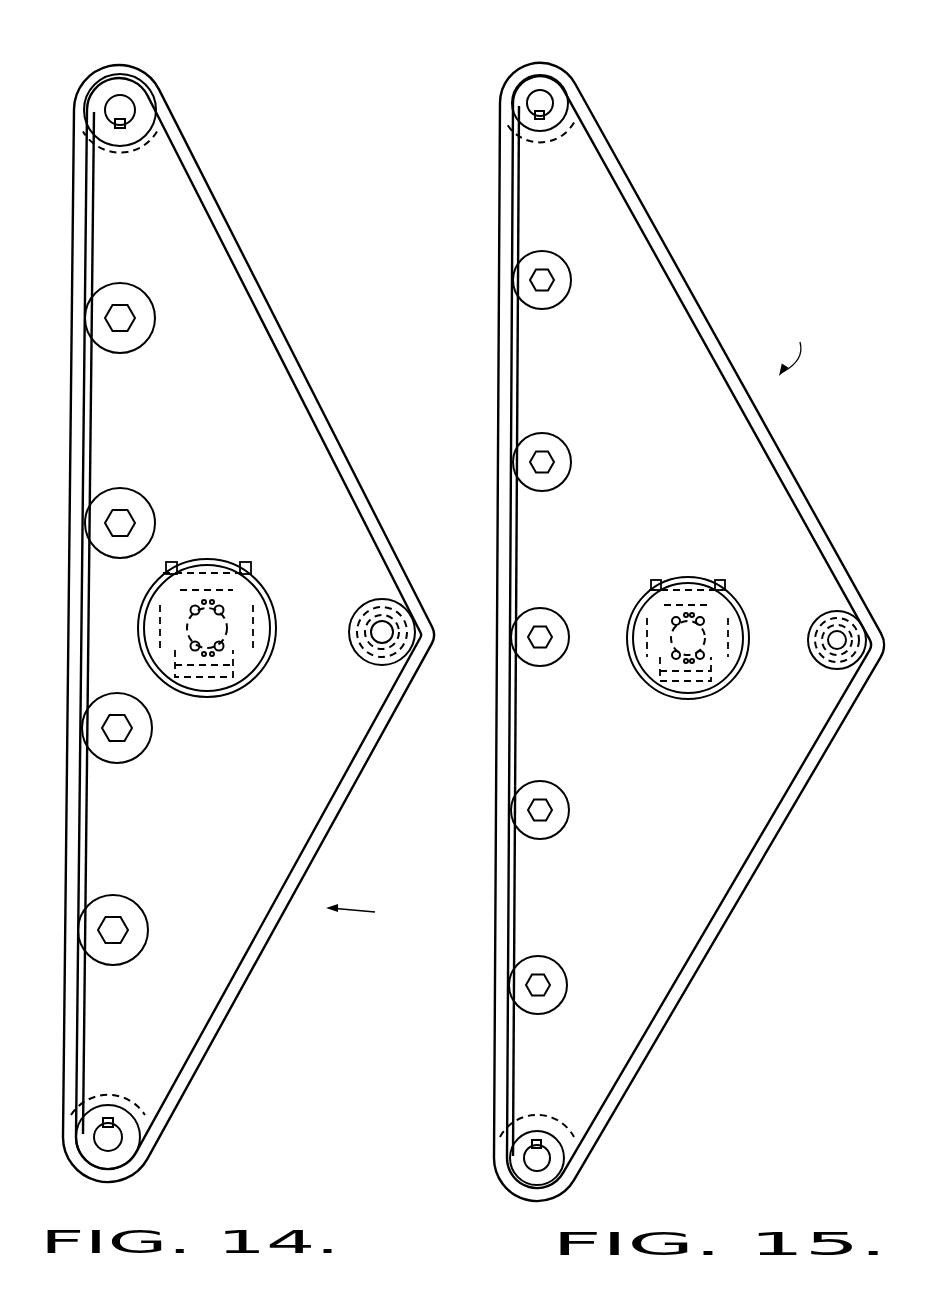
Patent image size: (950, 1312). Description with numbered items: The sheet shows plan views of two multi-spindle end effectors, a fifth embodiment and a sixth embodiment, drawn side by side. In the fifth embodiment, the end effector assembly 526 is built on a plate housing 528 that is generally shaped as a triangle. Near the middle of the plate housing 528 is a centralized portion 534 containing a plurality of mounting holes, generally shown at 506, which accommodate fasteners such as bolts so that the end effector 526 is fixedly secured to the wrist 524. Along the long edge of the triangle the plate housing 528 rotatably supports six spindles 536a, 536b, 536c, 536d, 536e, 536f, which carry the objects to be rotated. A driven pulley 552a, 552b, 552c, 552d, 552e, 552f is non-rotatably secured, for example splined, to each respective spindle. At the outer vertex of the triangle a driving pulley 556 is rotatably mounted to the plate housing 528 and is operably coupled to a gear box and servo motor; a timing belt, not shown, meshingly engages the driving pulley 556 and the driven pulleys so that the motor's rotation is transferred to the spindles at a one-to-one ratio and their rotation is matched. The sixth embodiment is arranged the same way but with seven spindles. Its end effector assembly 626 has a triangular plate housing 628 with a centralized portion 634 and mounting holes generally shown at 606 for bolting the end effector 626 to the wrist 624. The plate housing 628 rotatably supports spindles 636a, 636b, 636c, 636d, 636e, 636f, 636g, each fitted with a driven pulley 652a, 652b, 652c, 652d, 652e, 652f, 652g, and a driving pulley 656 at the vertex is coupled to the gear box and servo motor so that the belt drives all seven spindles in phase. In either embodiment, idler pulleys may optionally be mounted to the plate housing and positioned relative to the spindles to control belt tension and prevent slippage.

In FIG. 14, the mounting holes 506 is at (233, 635).
In FIG. 14, the wrist 524 is at (227, 668).
In FIG. 14, the end effector assembly 526 is at (375, 922).
In FIG. 14, the plate housing 528 is at (303, 372).
In FIG. 14, the centralized portion 534 is at (262, 616).
In FIG. 14, the spindle 536a is at (112, 100).
In FIG. 14, the spindle 536b is at (120, 306).
In FIG. 14, the spindle 536c is at (120, 517).
In FIG. 14, the spindle 536d is at (117, 740).
In FIG. 14, the spindle 536e is at (115, 920).
In FIG. 14, the spindle 536f is at (117, 1140).
In FIG. 14, the driven pulley 552a is at (145, 100).
In FIG. 14, the driven pulley 552b is at (137, 340).
In FIG. 14, the driven pulley 552c is at (148, 520).
In FIG. 14, the driven pulley 552d is at (137, 745).
In FIG. 14, the driven pulley 552e is at (142, 926).
In FIG. 14, the driven pulley 552f is at (104, 1107).
In FIG. 14, the driving pulley 556 is at (402, 656).
In FIG. 15, the mounting holes 606 is at (662, 655).
In FIG. 15, the wrist 624 is at (670, 688).
In FIG. 15, the end effector assembly 626 is at (808, 343).
In FIG. 15, the plate housing 628 is at (790, 455).
In FIG. 15, the centralized portion 634 is at (725, 672).
In FIG. 15, the spindle 636a is at (535, 97).
In FIG. 15, the spindle 636b is at (533, 277).
In FIG. 15, the spindle 636c is at (540, 460).
In FIG. 15, the spindle 636d is at (536, 626).
In FIG. 15, the spindle 636e is at (540, 817).
In FIG. 15, the spindle 636f is at (538, 973).
In FIG. 15, the spindle 636g is at (545, 1162).
In FIG. 15, the driven pulley 652a is at (560, 115).
In FIG. 15, the driven pulley 652b is at (553, 301).
In FIG. 15, the driven pulley 652c is at (565, 457).
In FIG. 15, the driven pulley 652d is at (560, 630).
In FIG. 15, the driven pulley 652e is at (560, 816).
In FIG. 15, the driven pulley 652f is at (564, 987).
In FIG. 15, the driven pulley 652g is at (540, 1135).
In FIG. 15, the driving pulley 656 is at (818, 618).